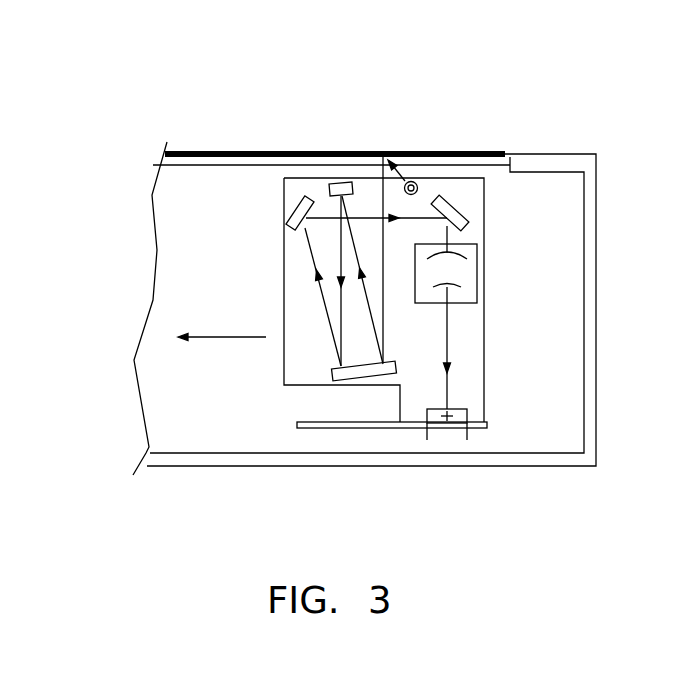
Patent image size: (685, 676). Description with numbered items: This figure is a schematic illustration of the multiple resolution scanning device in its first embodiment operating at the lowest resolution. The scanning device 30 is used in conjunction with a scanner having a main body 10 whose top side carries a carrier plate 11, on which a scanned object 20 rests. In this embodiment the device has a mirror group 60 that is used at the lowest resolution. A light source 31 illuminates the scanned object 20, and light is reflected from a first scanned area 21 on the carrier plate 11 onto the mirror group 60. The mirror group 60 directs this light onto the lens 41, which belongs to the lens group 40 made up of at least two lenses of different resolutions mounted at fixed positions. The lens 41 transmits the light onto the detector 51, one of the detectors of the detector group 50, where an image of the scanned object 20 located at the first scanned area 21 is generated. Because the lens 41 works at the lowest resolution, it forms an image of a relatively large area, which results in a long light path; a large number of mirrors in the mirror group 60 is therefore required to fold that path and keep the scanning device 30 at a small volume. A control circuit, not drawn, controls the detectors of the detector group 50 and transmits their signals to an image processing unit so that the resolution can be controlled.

The main body 10 is at (568, 152).
The carrier plate 11 is at (290, 152).
The scanned object 20 is at (233, 152).
The first scanned area 21 is at (383, 152).
The scanning device 30 is at (280, 322).
The light source 31 is at (416, 182).
The lens group 40 is at (498, 297).
The lens 41 is at (470, 268).
The detector group 50 is at (498, 409).
The detector 51 is at (457, 425).
The mirror group 60 is at (277, 213).